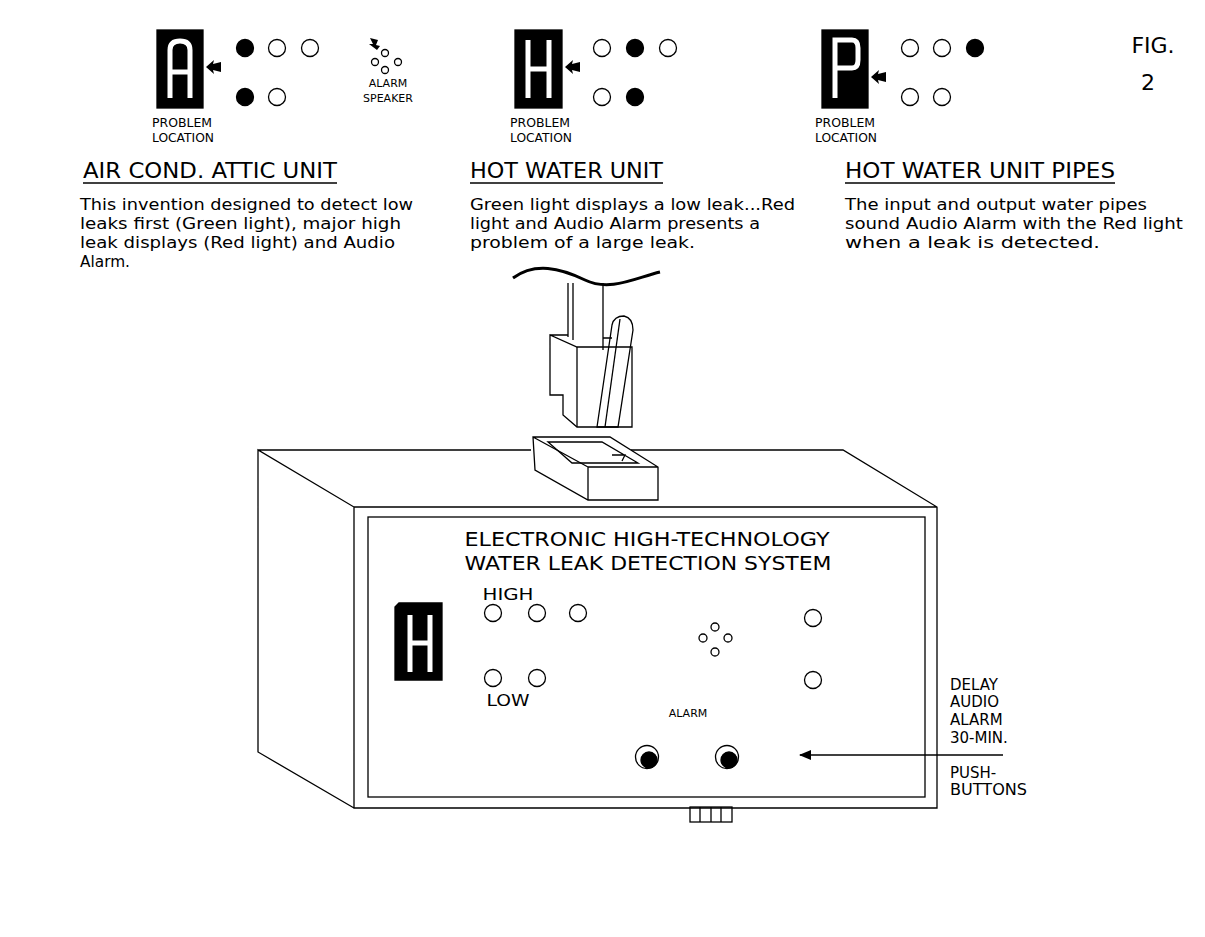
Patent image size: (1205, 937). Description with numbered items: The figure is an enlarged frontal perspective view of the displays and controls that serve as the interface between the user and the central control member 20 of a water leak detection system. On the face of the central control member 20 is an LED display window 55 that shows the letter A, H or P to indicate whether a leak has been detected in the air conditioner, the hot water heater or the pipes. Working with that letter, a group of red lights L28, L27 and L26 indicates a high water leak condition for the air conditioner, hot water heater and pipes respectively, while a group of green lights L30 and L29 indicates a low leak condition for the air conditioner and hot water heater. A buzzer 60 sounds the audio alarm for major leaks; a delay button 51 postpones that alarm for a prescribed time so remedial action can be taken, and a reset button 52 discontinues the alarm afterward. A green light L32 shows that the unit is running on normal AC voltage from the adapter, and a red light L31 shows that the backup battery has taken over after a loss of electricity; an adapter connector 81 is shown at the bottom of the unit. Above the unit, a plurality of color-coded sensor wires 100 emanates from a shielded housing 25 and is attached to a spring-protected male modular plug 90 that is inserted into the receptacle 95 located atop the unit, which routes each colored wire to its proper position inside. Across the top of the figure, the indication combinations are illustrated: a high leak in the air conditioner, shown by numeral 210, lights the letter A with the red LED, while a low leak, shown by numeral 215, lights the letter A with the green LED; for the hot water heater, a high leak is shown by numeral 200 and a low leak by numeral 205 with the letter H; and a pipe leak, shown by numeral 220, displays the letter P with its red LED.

The central control member 20 is at (541, 629).
The shielded housing 25 is at (585, 316).
The delay button 51 is at (727, 761).
The reset button 52 is at (647, 761).
The LED display window 55 is at (308, 671).
The buzzer 60 is at (715, 627).
The 9 VDC adapter connector 81 is at (675, 838).
The male modular plug 90 is at (641, 371).
The receptacle 95 is at (646, 468).
The plurality of sensor wires 100 is at (466, 334).
The high leak indication for hot water heater 200 is at (617, 63).
The low leak indication for hot water heater 205 is at (654, 90).
The high leak indication for air conditioner 210 is at (265, 59).
The low leak indication for air conditioner 215 is at (250, 104).
The pipe leak indication 220 is at (974, 52).
The red light L26 is at (579, 625).
The red light L27 is at (492, 625).
The red light L28 is at (537, 625).
The green light L29 is at (492, 668).
The green light L30 is at (537, 668).
The red light L31 is at (850, 676).
The green light L32 is at (850, 608).